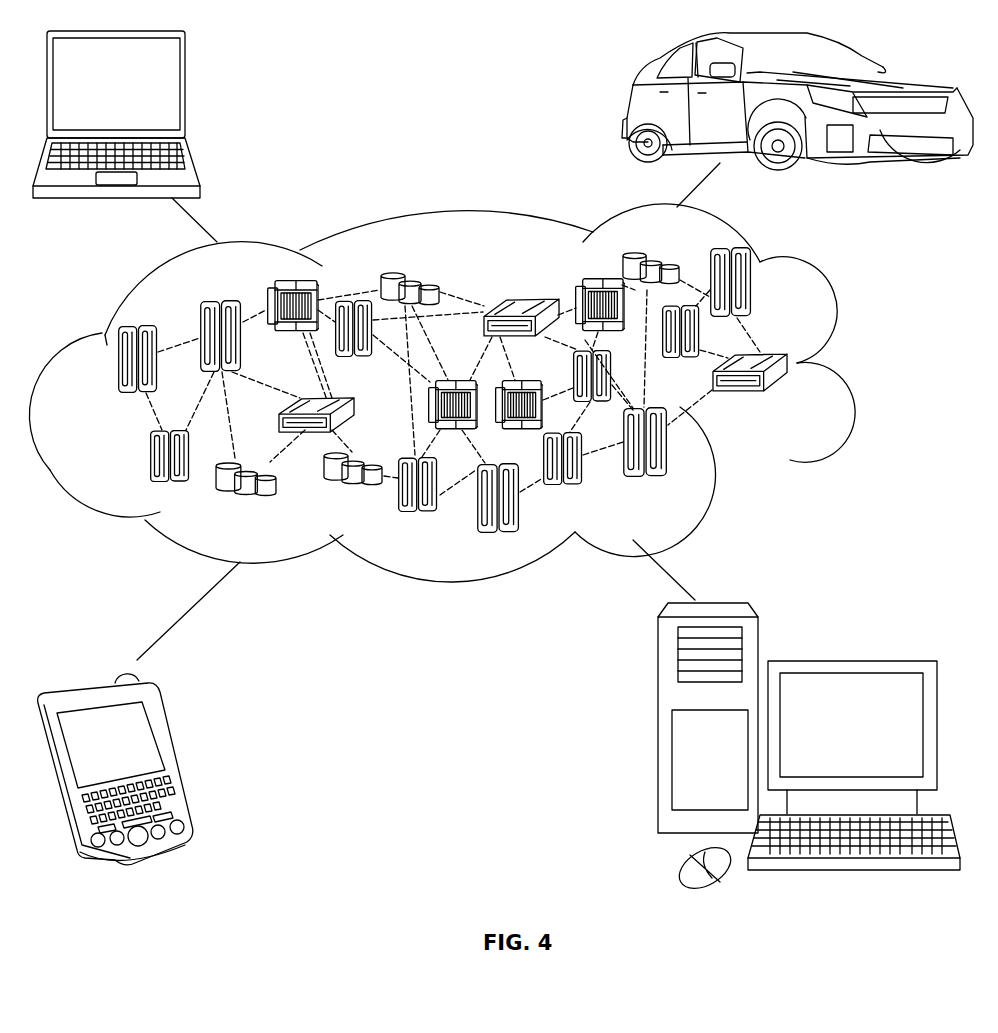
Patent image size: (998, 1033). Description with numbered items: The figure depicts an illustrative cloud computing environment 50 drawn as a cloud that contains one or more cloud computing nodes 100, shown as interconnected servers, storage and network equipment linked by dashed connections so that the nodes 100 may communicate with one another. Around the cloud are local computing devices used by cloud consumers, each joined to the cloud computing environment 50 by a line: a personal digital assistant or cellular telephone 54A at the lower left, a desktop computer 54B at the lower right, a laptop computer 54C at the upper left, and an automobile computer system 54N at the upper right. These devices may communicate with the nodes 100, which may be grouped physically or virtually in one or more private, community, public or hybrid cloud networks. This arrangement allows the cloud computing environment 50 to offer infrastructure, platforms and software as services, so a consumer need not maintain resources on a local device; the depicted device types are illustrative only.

The cloud computing environment 50 is at (852, 368).
The cloud computing nodes 100 is at (795, 401).
The personal digital assistant (PDA) or cellular telephone 54A is at (175, 757).
The desktop computer 54B is at (848, 660).
The laptop computer 54C is at (188, 92).
The automobile computer system 54N is at (628, 108).